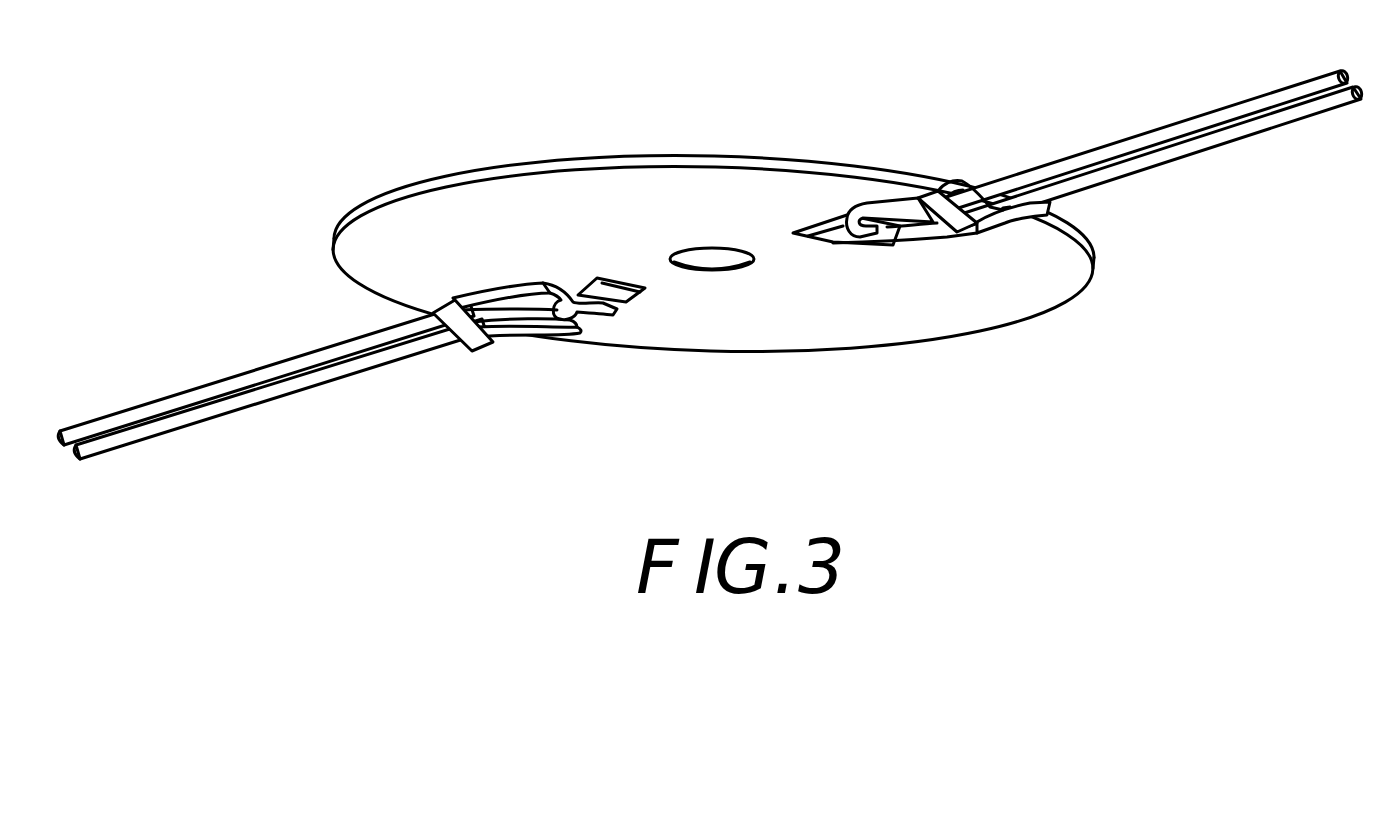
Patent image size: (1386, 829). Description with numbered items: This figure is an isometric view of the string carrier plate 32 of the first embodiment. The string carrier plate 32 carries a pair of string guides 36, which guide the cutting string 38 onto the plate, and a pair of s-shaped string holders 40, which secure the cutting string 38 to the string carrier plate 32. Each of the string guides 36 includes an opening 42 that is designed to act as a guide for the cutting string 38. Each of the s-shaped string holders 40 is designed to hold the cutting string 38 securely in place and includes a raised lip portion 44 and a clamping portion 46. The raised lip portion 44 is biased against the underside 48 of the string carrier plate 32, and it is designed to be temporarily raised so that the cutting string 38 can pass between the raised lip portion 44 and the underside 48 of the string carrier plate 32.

The string carrier plate 32 is at (343, 227).
The string guide 36 is at (472, 346).
The cutting string 38 is at (128, 441).
The s-shaped string holder 40 is at (846, 247).
The opening 42 is at (467, 300).
The raised lip portion 44 is at (613, 302).
The clamping portion 46 is at (582, 327).
The underside 48 is at (610, 281).